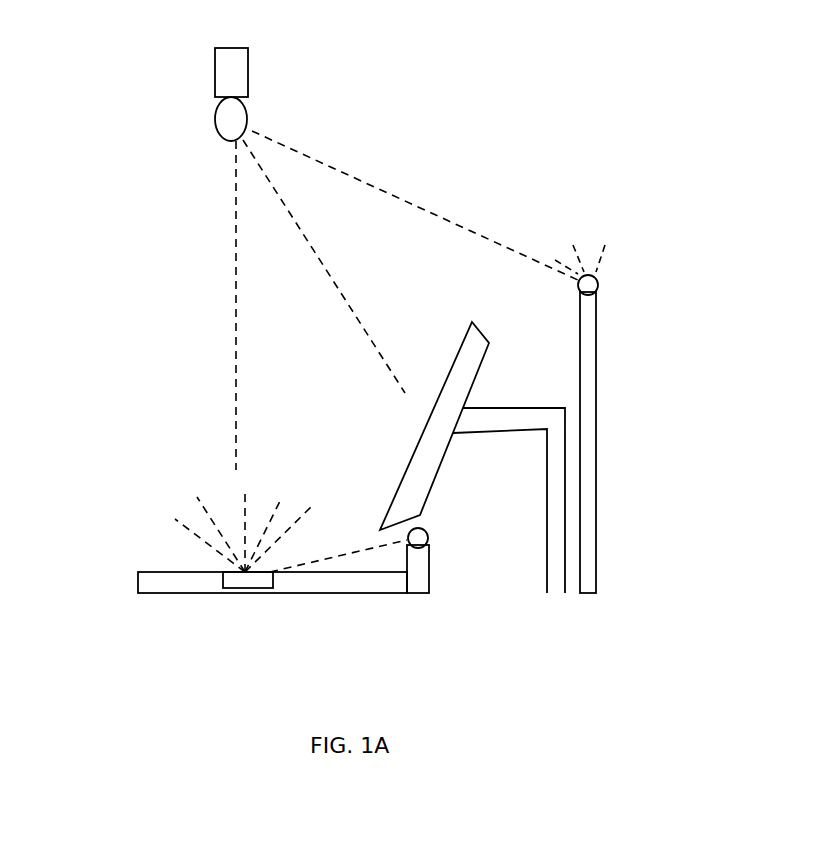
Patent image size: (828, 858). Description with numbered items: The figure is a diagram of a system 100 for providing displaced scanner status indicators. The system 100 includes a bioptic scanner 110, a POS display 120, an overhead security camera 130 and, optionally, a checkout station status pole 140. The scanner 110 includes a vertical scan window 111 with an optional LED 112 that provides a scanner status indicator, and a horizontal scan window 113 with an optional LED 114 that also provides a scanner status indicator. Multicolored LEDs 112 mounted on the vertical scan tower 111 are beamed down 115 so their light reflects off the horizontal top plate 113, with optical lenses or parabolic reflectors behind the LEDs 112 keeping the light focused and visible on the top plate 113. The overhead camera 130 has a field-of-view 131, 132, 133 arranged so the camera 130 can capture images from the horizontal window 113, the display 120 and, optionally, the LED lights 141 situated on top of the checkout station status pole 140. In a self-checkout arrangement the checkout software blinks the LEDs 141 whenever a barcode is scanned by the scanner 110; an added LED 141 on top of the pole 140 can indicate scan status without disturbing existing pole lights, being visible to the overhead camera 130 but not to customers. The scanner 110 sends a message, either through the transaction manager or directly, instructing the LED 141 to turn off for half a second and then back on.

The system 100 is at (608, 81).
The bioptic scanner 110 is at (412, 607).
The vertical scan window 111 is at (429, 578).
The Light Emitting Diode 112 is at (426, 531).
The horizontal scan window 113 is at (138, 588).
The LED 114 is at (223, 573).
The beamed down light 115 is at (353, 550).
The POS display 120 is at (488, 342).
The overhead security camera 130 is at (248, 118).
The field-of-view 131 is at (235, 343).
The field-of-view 132 is at (332, 275).
The field-of-view 133 is at (398, 202).
The checkout station status pole 140 is at (596, 408).
The LED lights 141 is at (598, 280).